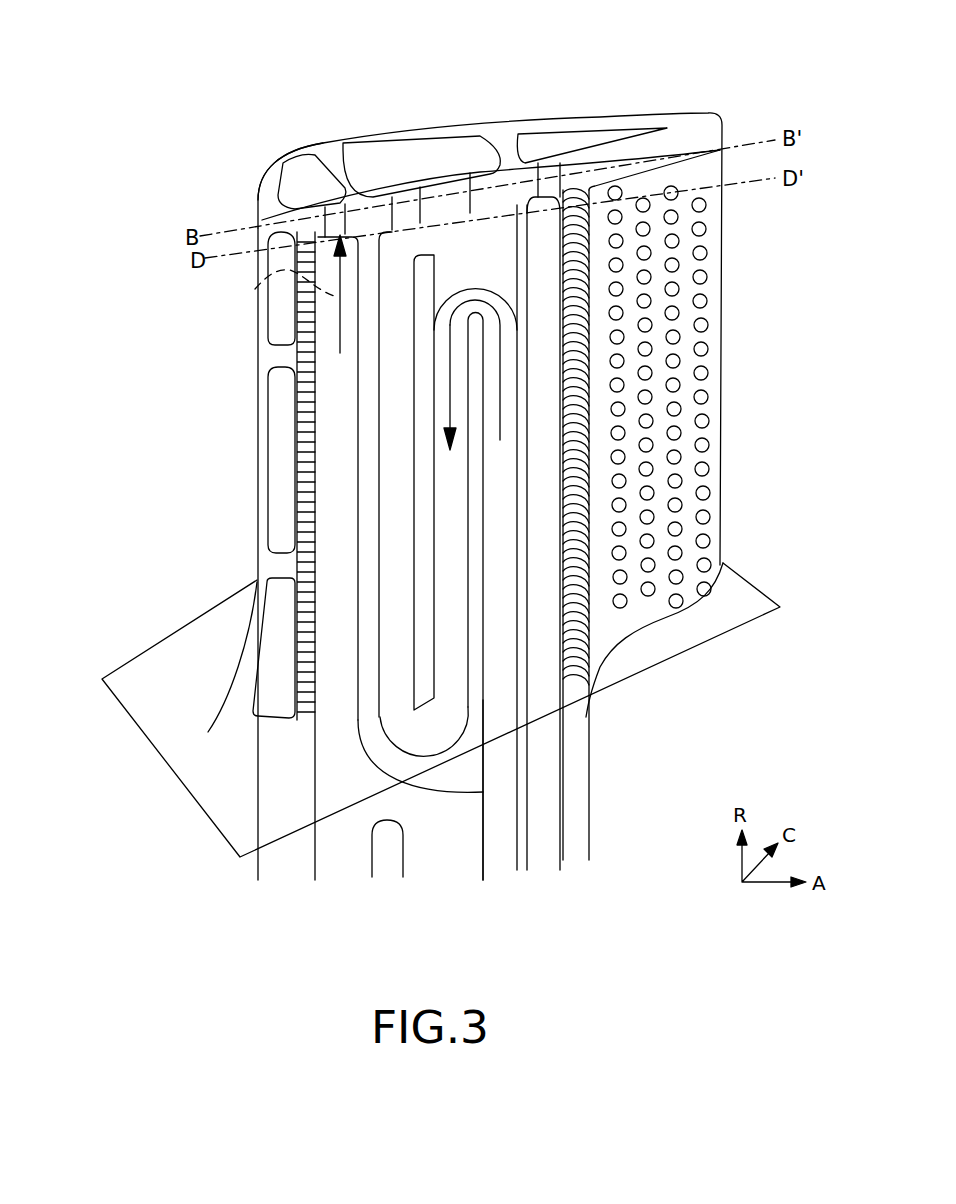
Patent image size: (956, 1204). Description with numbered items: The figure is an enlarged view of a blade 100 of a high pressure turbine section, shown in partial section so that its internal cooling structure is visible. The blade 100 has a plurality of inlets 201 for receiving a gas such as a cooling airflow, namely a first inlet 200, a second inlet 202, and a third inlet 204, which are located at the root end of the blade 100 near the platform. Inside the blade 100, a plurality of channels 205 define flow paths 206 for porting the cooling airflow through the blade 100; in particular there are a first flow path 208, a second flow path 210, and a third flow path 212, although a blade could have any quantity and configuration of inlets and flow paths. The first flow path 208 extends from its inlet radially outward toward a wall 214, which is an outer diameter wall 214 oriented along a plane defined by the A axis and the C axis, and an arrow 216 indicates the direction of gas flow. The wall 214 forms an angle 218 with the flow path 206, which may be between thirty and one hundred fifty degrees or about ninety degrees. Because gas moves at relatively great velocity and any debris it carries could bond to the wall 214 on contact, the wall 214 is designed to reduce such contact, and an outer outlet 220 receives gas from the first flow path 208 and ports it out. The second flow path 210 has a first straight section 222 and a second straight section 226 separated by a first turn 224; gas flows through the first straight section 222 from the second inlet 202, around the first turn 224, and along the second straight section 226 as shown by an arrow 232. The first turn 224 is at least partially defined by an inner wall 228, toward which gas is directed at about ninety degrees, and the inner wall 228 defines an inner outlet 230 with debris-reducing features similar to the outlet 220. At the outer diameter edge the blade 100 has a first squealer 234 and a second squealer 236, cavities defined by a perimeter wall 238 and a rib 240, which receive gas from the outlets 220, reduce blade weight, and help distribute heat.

The blade 100 is at (131, 143).
The first inlet 200 is at (337, 813).
The inlets 201 is at (397, 789).
The second inlet 202 is at (496, 742).
The third inlet 204 is at (550, 717).
The channels 205 is at (332, 490).
The flow paths 206 is at (342, 462).
The first flow path 208 is at (323, 543).
The second flow path 210 is at (497, 700).
The third flow path 212 is at (547, 623).
The outer diameter wall 214 is at (262, 215).
The arrow 216 is at (340, 333).
The angle 218 is at (255, 289).
The outer outlet 220 is at (352, 228).
The first straight section 222 is at (500, 492).
The first turn 224 is at (480, 287).
The second straight section 226 is at (457, 383).
The inner wall 228 is at (453, 292).
The inner outlet 230 is at (470, 263).
The arrow 232 is at (500, 347).
The first squealer 234 is at (290, 187).
The second squealer 236 is at (411, 178).
The perimeter wall 238 is at (292, 158).
The rib 240 is at (344, 150).